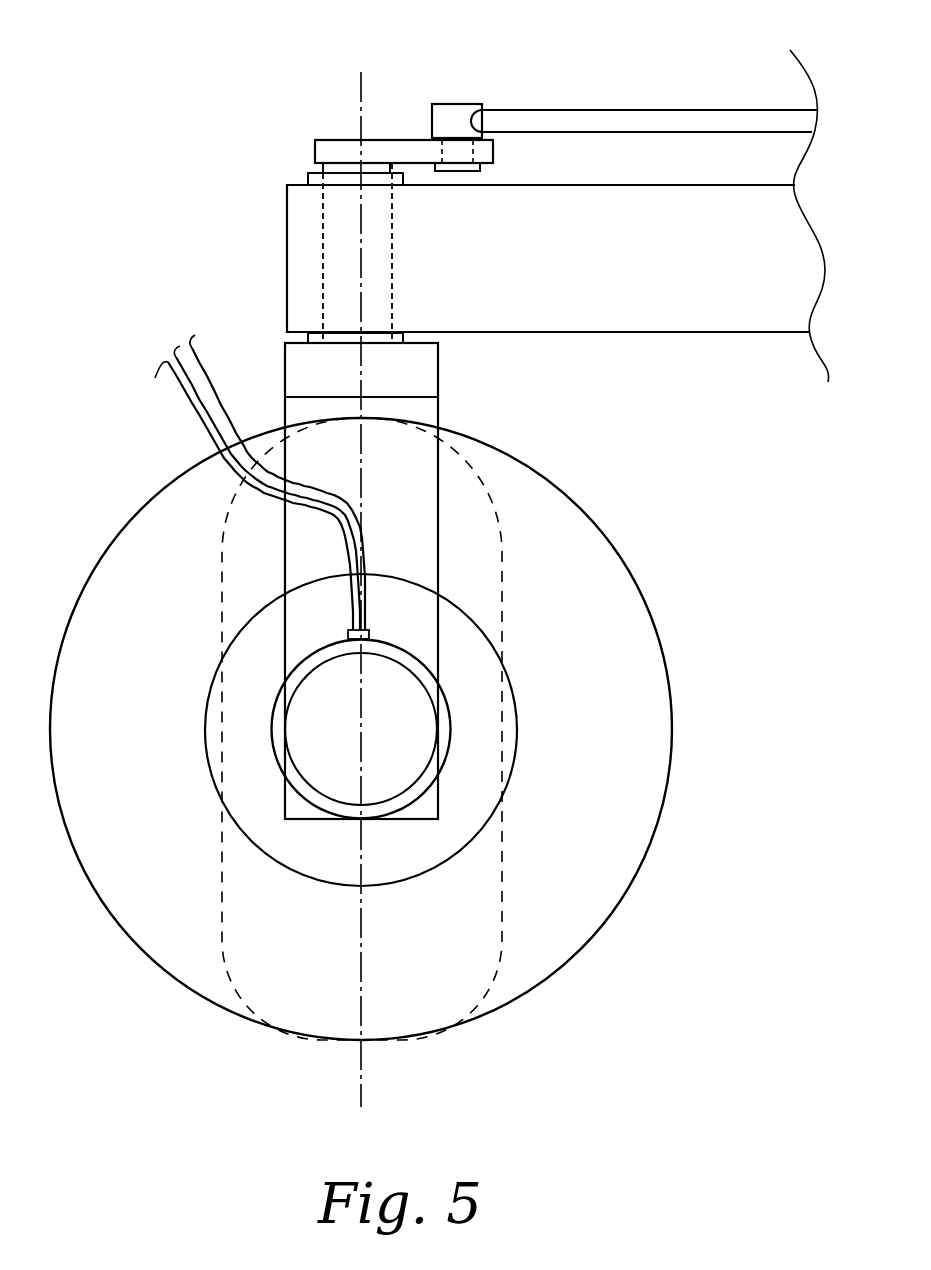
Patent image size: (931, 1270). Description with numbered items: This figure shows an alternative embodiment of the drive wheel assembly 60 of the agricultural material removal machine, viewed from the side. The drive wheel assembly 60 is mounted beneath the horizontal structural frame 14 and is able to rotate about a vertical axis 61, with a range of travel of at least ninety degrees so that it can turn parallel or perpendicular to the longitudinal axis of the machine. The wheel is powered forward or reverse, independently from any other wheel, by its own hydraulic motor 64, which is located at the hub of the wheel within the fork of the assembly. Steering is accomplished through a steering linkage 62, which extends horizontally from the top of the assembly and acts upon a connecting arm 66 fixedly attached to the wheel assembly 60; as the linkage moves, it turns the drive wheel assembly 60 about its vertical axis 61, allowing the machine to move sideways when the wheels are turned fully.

The horizontal structural frame 14 is at (305, 251).
The drive wheel assembly 60 is at (116, 472).
The vertical axis 61 is at (358, 86).
The steering linkage 62 is at (634, 108).
The hydraulic motor 64 is at (400, 660).
The connecting arm 66 is at (408, 140).